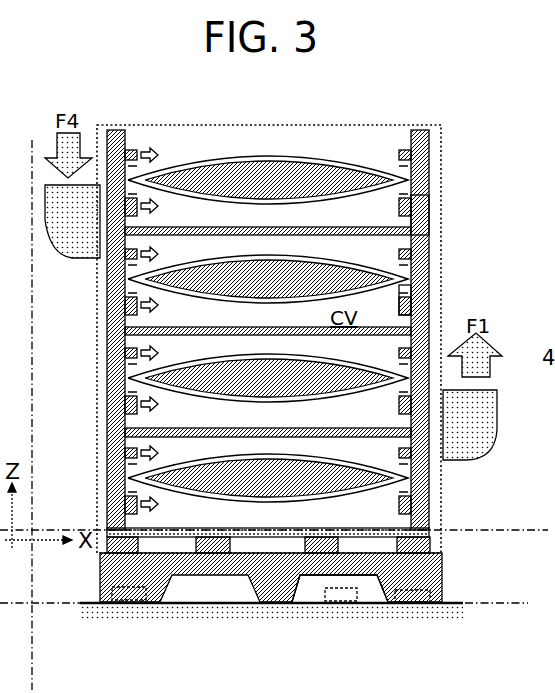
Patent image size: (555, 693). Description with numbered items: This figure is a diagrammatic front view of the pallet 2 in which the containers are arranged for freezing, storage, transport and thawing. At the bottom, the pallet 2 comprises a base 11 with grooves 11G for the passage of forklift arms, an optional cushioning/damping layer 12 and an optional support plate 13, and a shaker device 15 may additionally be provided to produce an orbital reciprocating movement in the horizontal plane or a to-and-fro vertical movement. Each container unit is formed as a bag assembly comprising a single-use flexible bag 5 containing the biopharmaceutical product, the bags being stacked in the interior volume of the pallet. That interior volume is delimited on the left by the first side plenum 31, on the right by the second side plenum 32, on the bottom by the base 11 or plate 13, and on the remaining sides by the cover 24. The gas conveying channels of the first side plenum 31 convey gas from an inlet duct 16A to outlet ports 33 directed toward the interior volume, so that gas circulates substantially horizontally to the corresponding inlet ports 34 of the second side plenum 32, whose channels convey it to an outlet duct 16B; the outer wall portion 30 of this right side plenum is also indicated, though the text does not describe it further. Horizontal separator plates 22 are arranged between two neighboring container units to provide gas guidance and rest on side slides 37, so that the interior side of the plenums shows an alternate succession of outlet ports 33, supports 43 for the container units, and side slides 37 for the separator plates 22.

The pallet 2 is at (475, 130).
The single-use flexible bag 5 is at (268, 331).
The base 11 is at (452, 574).
The grooves 11G is at (378, 604).
The cushioning/damping layer 12 is at (445, 532).
The support plate 13 is at (428, 535).
The shaker device 15 is at (140, 603).
The inlet duct 16A is at (72, 221).
The outlet duct 16B is at (470, 425).
The horizontal separator plates 22 is at (337, 228).
The cover 24 is at (287, 125).
The right side wall 30 is at (421, 318).
The first side plenum 31 is at (98, 375).
The second side plenum 32 is at (445, 262).
The outlet ports 33 is at (140, 150).
The inlet ports 34 is at (392, 150).
The side slides 37 is at (430, 222).
The support 43 is at (415, 300).